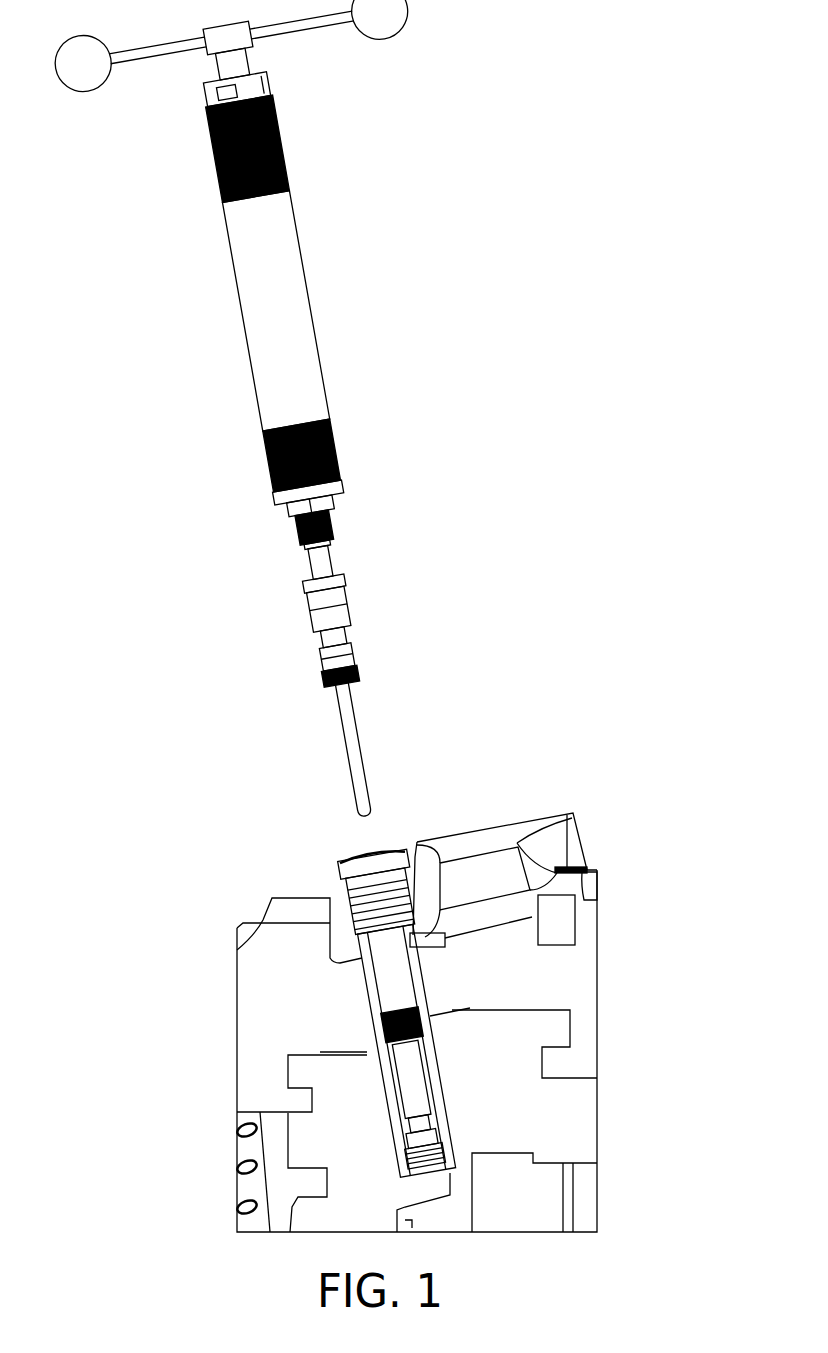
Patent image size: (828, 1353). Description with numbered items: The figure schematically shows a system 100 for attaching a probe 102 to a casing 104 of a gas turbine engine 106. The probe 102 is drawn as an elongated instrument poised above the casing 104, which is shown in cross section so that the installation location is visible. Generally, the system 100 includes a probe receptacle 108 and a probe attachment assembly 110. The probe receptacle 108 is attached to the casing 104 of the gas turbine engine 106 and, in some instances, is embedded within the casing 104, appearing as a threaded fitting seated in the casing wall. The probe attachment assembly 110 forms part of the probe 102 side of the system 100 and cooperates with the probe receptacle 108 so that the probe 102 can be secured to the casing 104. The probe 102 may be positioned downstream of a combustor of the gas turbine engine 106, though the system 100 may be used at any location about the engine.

The system 100 is at (314, 408).
The probe 102 is at (358, 743).
The casing 104 is at (550, 818).
The gas turbine engine 106 is at (463, 975).
The probe receptacle 108 is at (381, 829).
The probe attachment assembly 110 is at (392, 565).